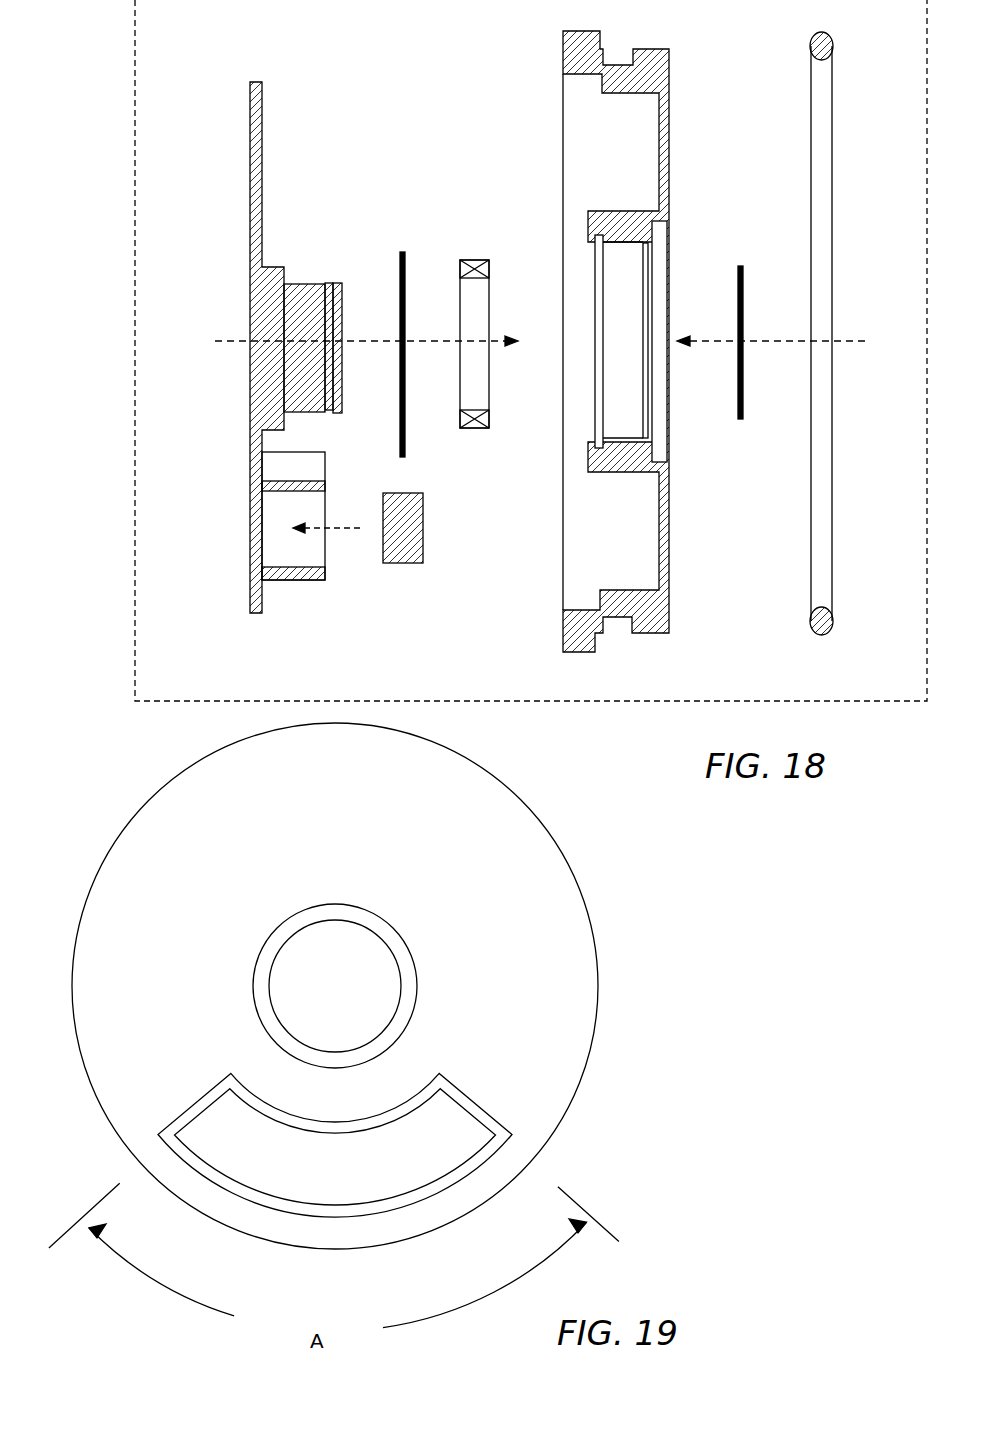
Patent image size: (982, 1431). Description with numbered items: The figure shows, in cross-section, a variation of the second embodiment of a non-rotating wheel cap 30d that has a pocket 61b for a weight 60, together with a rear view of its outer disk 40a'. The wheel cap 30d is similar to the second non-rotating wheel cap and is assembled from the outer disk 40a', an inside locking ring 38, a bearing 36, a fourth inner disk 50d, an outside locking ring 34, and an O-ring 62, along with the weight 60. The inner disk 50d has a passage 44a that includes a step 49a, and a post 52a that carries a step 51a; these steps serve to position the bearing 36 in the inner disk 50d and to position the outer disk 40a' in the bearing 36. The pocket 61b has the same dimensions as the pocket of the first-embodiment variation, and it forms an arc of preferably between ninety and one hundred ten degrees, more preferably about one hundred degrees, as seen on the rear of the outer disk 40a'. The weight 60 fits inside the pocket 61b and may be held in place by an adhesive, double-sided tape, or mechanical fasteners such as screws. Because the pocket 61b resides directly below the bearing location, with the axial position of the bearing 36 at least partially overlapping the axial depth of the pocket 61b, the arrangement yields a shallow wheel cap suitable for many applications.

In FIG. 18, the non-rotating wheel cap 30d is at (112, 100).
In FIG. 18, the outer disk 40a' is at (226, 339).
In FIG. 19, the outer disk 40a' is at (335, 986).
In FIG. 18, the step 51a is at (285, 275).
In FIG. 18, the post 52a is at (325, 292).
In FIG. 18, the pocket 61b is at (310, 548).
In FIG. 18, the weight 60 is at (405, 512).
In FIG. 18, the inside locking ring 38 is at (403, 252).
In FIG. 18, the bearing 36 is at (477, 260).
In FIG. 18, the fourth inner disk 50d is at (575, 65).
In FIG. 18, the passage 44a is at (612, 278).
In FIG. 18, the step 49a is at (646, 438).
In FIG. 18, the outside locking ring 34 is at (745, 300).
In FIG. 18, the O-ring 62 is at (818, 210).